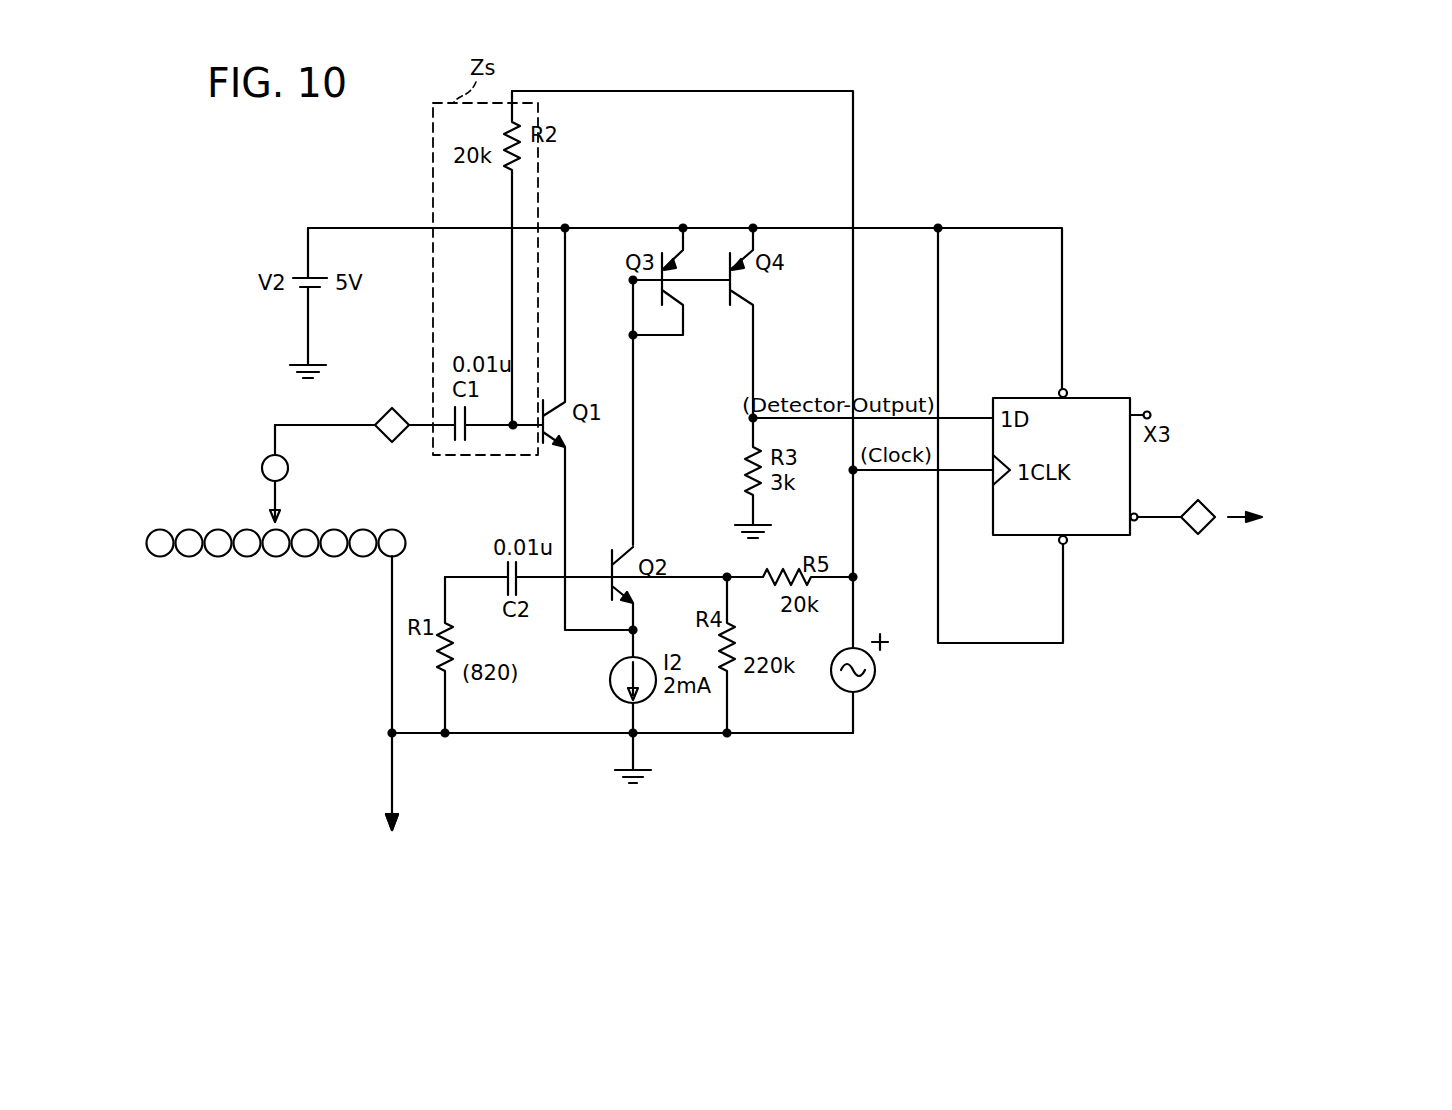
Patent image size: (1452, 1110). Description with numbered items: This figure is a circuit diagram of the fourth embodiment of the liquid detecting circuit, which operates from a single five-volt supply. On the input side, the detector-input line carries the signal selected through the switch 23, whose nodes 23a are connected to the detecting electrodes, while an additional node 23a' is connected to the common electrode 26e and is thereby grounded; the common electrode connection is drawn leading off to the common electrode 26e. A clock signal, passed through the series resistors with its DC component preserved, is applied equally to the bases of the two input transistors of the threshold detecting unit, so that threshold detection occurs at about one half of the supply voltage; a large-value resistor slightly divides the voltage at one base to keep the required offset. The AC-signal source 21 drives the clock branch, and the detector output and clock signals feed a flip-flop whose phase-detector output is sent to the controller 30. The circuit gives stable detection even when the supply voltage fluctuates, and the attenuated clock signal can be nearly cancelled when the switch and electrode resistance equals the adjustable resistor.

The switch 23 is at (275, 433).
The nodes of the switch 23a is at (309, 564).
The node connected to the common electrode 23a' is at (425, 531).
The AC-signal source 21 is at (833, 666).
The common electrode 26e is at (395, 721).
The controller 30 is at (1272, 518).